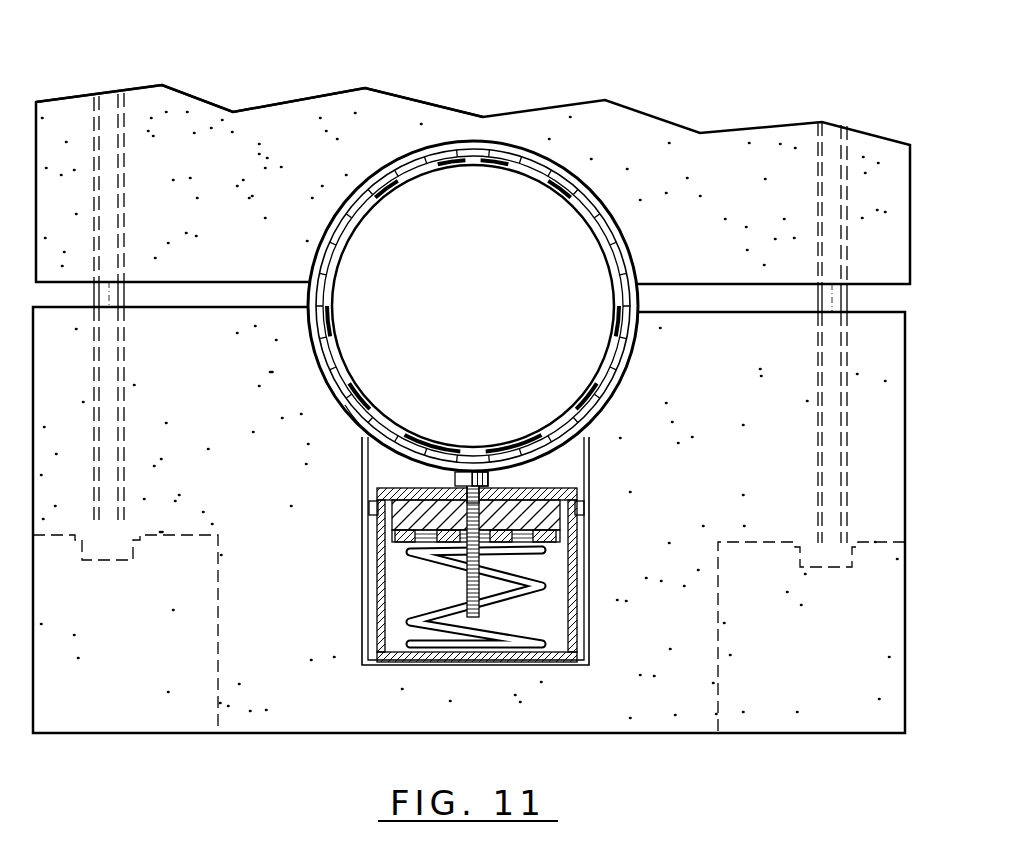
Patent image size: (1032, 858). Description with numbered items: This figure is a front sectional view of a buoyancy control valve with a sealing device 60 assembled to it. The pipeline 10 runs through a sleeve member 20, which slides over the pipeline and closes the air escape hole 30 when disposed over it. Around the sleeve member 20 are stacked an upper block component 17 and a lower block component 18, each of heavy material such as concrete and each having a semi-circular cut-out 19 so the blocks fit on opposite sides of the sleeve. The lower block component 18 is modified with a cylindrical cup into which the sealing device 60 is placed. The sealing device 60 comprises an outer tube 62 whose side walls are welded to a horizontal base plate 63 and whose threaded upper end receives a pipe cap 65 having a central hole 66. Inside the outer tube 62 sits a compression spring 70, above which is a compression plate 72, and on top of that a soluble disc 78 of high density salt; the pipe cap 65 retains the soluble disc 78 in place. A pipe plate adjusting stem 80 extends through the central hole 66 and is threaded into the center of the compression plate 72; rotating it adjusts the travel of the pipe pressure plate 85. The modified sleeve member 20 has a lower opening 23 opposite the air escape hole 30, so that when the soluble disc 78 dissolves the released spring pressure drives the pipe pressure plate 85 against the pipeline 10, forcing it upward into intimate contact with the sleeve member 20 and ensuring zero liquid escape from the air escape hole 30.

The pipeline section 10 is at (382, 418).
The upper block component 17 is at (687, 128).
The lower block component 18 is at (677, 737).
The cut-out 19 is at (548, 157).
The sleeve member 20 is at (408, 163).
The lower opening 23 is at (366, 435).
The air escape hole 30 is at (474, 156).
The sealing device 60 is at (334, 86).
The outer tube 62 is at (378, 557).
The base plate 63 is at (418, 660).
The pipe cap 65 is at (370, 508).
The central hole 66 is at (503, 482).
The compression spring 70 is at (538, 592).
The compression plate 72 is at (550, 538).
The soluble disc 78 is at (550, 512).
The pipe plate adjusting stem 80 is at (462, 585).
The pipe pressure plate 85 is at (512, 474).